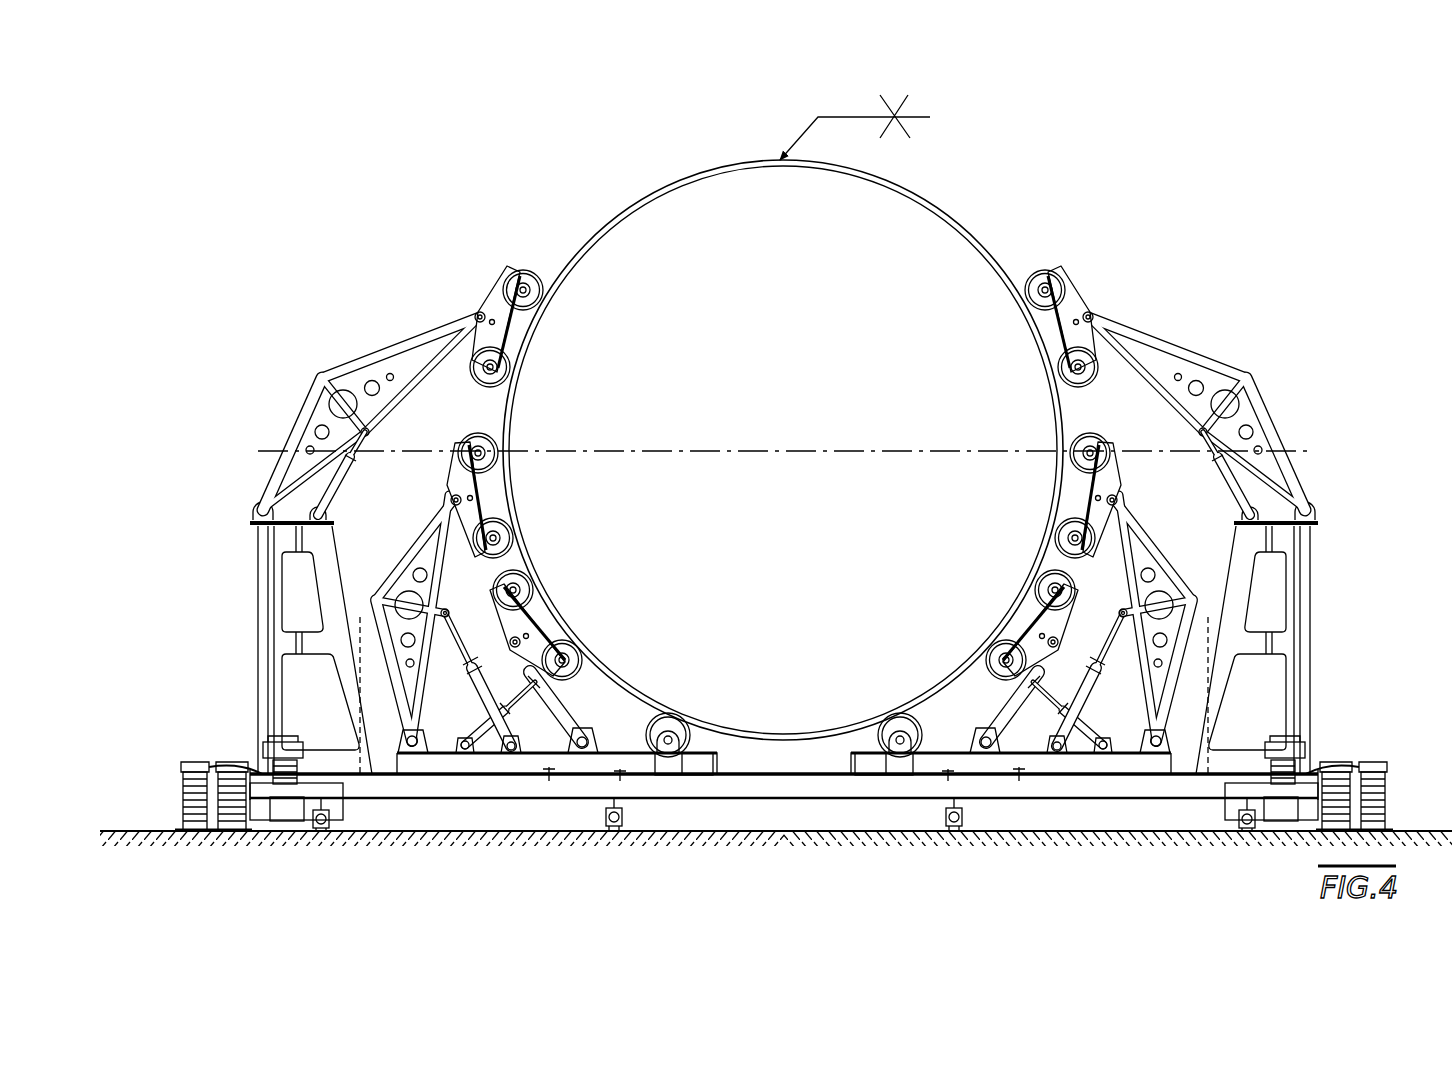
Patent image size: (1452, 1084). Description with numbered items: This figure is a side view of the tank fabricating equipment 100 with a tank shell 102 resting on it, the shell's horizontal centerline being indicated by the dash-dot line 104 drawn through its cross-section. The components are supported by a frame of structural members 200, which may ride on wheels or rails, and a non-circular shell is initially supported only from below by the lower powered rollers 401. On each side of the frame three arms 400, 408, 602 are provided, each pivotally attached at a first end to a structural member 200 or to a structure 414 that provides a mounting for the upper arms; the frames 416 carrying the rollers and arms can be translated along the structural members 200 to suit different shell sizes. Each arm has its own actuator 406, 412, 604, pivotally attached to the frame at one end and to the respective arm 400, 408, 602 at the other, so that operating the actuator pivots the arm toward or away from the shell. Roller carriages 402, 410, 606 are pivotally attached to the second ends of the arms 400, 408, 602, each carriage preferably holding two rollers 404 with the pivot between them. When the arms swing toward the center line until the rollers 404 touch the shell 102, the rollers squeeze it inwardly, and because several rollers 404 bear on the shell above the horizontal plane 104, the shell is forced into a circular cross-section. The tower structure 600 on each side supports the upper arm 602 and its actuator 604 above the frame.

The tank fabricating equipment 100 is at (378, 260).
The tank shell 102 is at (905, 188).
The pipe central axis 104 is at (930, 117).
The structural members 200 is at (395, 805).
The arm 400 is at (558, 707).
The lower powered rollers 401 is at (887, 730).
The roller carriage 402 is at (537, 640).
The rollers 404 is at (517, 357).
The actuator 406 is at (470, 748).
The arm 408 is at (410, 550).
The roller carriage 410 is at (458, 442).
The actuator 412 is at (490, 700).
The structure 414 is at (258, 632).
The frames 416 is at (312, 800).
The tower 600 is at (292, 540).
The arm 602 is at (300, 427).
The actuator 604 is at (305, 452).
The roller carriage 606 is at (498, 300).